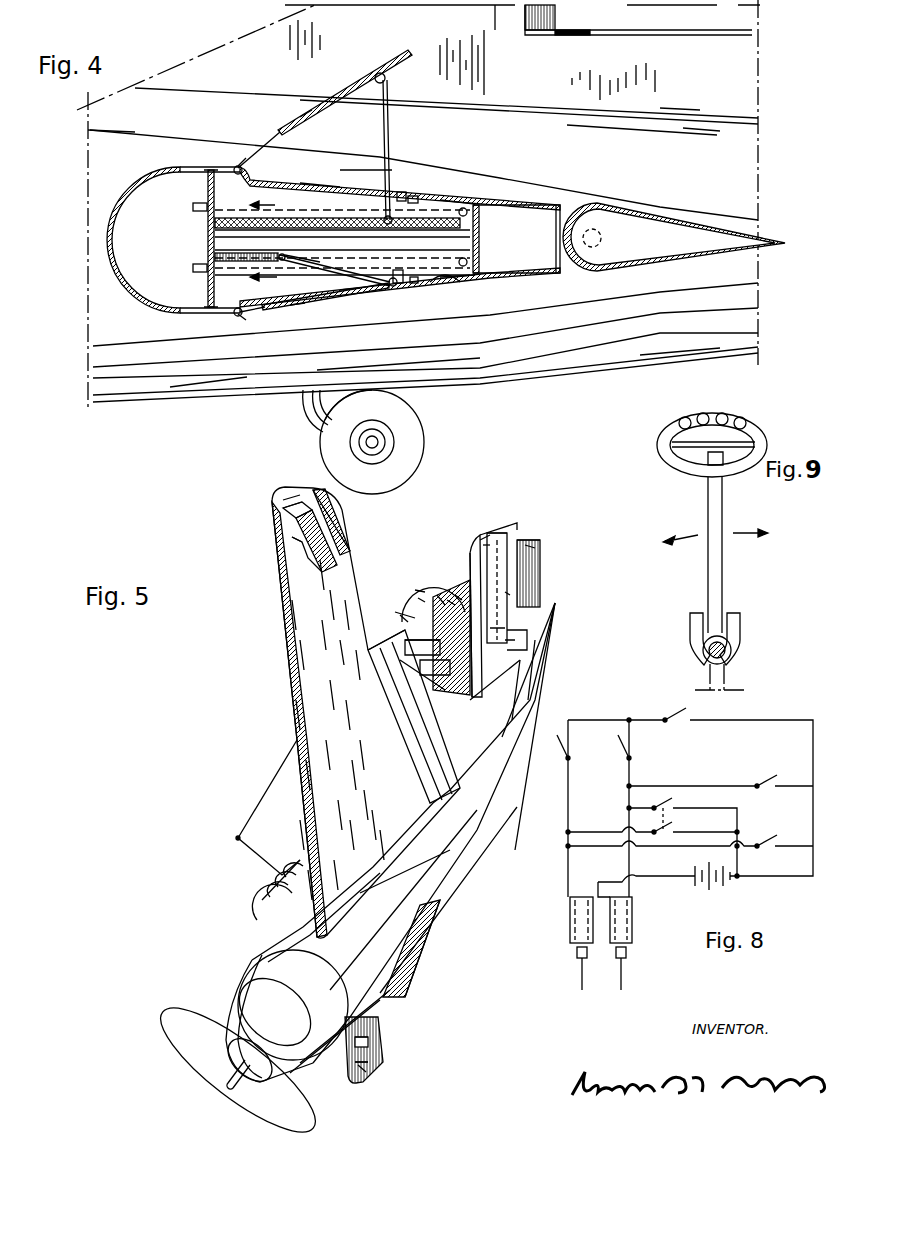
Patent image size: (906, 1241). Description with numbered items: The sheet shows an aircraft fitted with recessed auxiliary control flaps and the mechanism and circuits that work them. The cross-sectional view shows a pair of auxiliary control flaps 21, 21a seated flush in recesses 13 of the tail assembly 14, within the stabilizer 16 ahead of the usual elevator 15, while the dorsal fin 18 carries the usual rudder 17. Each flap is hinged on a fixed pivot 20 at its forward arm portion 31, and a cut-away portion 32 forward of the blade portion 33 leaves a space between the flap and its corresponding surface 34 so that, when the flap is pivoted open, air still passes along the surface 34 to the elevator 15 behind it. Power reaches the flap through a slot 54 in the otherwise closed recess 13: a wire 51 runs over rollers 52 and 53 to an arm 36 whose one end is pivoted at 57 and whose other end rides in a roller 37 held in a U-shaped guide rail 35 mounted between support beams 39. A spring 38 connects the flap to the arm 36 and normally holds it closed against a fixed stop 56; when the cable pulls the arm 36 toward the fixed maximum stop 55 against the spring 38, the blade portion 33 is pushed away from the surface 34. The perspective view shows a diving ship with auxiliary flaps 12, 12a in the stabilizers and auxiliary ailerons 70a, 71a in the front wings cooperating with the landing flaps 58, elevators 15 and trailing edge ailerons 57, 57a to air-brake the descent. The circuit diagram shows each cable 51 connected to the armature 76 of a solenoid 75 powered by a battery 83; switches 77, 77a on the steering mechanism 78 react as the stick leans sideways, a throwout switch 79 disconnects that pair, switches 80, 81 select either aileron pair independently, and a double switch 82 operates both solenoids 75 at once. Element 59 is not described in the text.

In FIG. 5, the auxiliary control flap 12 is at (420, 599).
In FIG. 5, the auxiliary control flap 12a is at (402, 621).
In FIG. 4, the recess 13 is at (318, 183).
In FIG. 5, the recess 13 is at (285, 503).
In FIG. 4, the tail assembly 14 is at (680, 81).
In FIG. 4, the elevator 15 is at (700, 255).
In FIG. 5, the elevator 15 is at (540, 556).
In FIG. 4, the stabilizer 16 is at (520, 202).
In FIG. 5, the stabilizer 16 is at (515, 531).
In FIG. 4, the rudder 17 is at (638, 20).
In FIG. 5, the rudder 17 is at (458, 595).
In FIG. 4, the dorsal fin 18 is at (497, 17).
In FIG. 5, the dorsal fin 18 is at (417, 590).
In FIG. 4, the pivot 20 is at (234, 167).
In FIG. 4, the auxiliary control flap 21 is at (347, 89).
In FIG. 5, the auxiliary control flap 21 is at (483, 551).
In FIG. 4, the auxiliary control flap 21a is at (335, 309).
In FIG. 5, the auxiliary control flap 21a is at (508, 546).
In FIG. 4, the forward arm portion 31 is at (262, 152).
In FIG. 4, the cut-away portion 32 is at (288, 129).
In FIG. 5, the cut-away portion 32 is at (298, 554).
In FIG. 4, the blade portion 33 is at (318, 108).
In FIG. 5, the blade portion 33 is at (447, 600).
In FIG. 4, the corresponding surface 34 is at (465, 200).
In FIG. 5, the corresponding surface 34 is at (532, 546).
In FIG. 4, the guide rail 35 is at (213, 240).
In FIG. 4, the arm 36 is at (389, 163).
In FIG. 4, the roller 37 is at (280, 229).
In FIG. 4, the spring 38 is at (246, 253).
In FIG. 4, the support beam 39 is at (208, 186).
In FIG. 4, the wire 51 is at (192, 212).
In FIG. 8, the wire 51 is at (580, 982).
In FIG. 4, the roller 52 is at (195, 208).
In FIG. 4, the roller 53 is at (470, 213).
In FIG. 4, the slot 54 is at (380, 172).
In FIG. 4, the stop 55 is at (405, 194).
In FIG. 4, the stop 56 is at (420, 198).
In FIG. 4, the trailing edge aileron 57 is at (386, 82).
In FIG. 5, the trailing edge aileron 57 is at (374, 1042).
In FIG. 5, the trailing edge aileron 57a is at (342, 521).
In FIG. 5, the landing flap 58 is at (405, 716).
In FIG. 5, the vertical fin 59 is at (513, 726).
In FIG. 5, the auxiliary control flap 70a is at (371, 1066).
In FIG. 5, the auxiliary control flap 71a is at (333, 575).
In FIG. 8, the solenoid 75 is at (572, 929).
In FIG. 8, the armature 76 is at (577, 953).
In FIG. 9, the switch 77 is at (690, 621).
In FIG. 8, the switch 77 is at (560, 745).
In FIG. 9, the switch 77a is at (740, 621).
In FIG. 8, the switch 77a is at (621, 745).
In FIG. 9, the steering mechanism 78 is at (708, 502).
In FIG. 9, the throwout switch 79 is at (683, 418).
In FIG. 8, the throwout switch 79 is at (678, 718).
In FIG. 9, the switch 80 is at (708, 404).
In FIG. 8, the switch 80 is at (766, 782).
In FIG. 9, the switch 81 is at (724, 413).
In FIG. 8, the switch 81 is at (768, 840).
In FIG. 9, the double switch 82 is at (743, 418).
In FIG. 8, the double switch 82 is at (673, 806).
In FIG. 8, the battery 83 is at (716, 884).